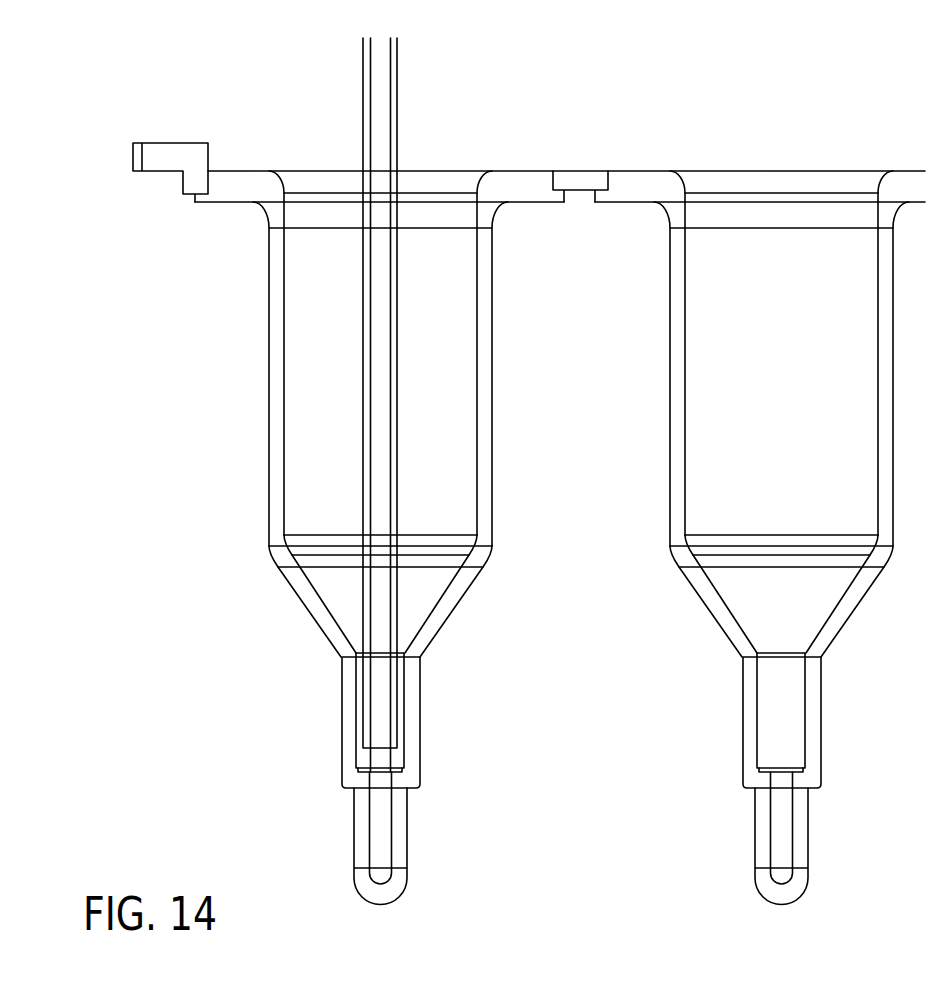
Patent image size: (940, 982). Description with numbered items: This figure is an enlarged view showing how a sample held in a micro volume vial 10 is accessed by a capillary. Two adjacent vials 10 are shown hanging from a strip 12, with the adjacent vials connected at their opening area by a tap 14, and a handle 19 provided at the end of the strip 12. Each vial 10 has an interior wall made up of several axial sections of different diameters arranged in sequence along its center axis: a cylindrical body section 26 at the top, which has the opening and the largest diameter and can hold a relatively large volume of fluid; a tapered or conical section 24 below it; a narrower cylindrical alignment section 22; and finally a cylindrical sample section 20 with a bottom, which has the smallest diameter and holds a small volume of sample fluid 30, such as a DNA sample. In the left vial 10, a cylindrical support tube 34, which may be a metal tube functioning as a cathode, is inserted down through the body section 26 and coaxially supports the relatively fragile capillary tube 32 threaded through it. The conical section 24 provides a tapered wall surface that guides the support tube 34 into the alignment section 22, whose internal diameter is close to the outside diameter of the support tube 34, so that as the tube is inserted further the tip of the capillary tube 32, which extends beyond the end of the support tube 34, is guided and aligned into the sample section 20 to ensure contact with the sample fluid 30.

The micro volume vial 10 is at (396, 538).
The strip 12 is at (227, 111).
The tap 14 is at (575, 172).
The handle 19 is at (160, 166).
The cylindrical sample section 20 is at (408, 818).
The cylindrical alignment section 22 is at (420, 713).
The conical section 24 is at (452, 605).
The cylindrical body section 26 is at (485, 395).
The sample fluid 30 is at (378, 847).
The capillary tube 32 is at (370, 779).
The support tube 34 is at (398, 115).